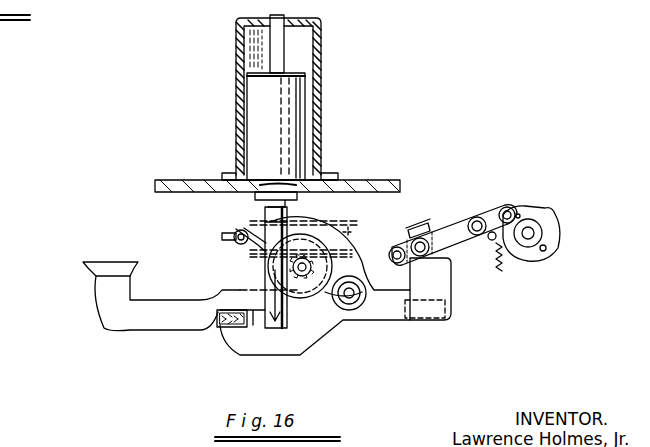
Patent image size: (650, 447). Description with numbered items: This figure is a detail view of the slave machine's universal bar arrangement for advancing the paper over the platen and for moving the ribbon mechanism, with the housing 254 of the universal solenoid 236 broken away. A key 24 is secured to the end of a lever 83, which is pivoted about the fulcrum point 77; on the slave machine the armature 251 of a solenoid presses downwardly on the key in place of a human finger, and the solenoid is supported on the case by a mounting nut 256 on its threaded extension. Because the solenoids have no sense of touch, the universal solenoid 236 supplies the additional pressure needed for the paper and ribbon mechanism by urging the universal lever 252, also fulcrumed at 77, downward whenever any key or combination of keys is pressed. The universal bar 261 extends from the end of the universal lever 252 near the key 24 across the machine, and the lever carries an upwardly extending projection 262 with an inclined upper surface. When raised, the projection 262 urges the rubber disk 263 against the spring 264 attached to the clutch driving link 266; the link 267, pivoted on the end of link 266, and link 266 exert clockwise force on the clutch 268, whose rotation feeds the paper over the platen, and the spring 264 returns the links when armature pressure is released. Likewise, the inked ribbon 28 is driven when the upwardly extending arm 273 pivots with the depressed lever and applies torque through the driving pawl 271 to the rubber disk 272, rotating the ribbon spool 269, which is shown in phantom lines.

The key 24 is at (112, 262).
The inked ribbon 28 is at (353, 238).
The fulcrum point 77 is at (350, 300).
The lever 83 is at (140, 315).
The universal solenoid 236 is at (268, 105).
The armature 251 is at (265, 215).
The universal lever 252 is at (303, 347).
The housing 254 is at (321, 107).
The mounting nut 256 is at (298, 196).
The universal bar 261 is at (222, 328).
The projection 262 is at (452, 292).
The rubber disk 263 is at (430, 227).
The spring 264 is at (510, 273).
The clutch driving link 266 is at (455, 240).
The link 267 is at (500, 209).
The clutch 268 is at (552, 230).
The ribbon spool 269 is at (352, 232).
The driving pawl 271 is at (289, 246).
The rubber disk 272 is at (274, 286).
The arm 273 is at (355, 255).